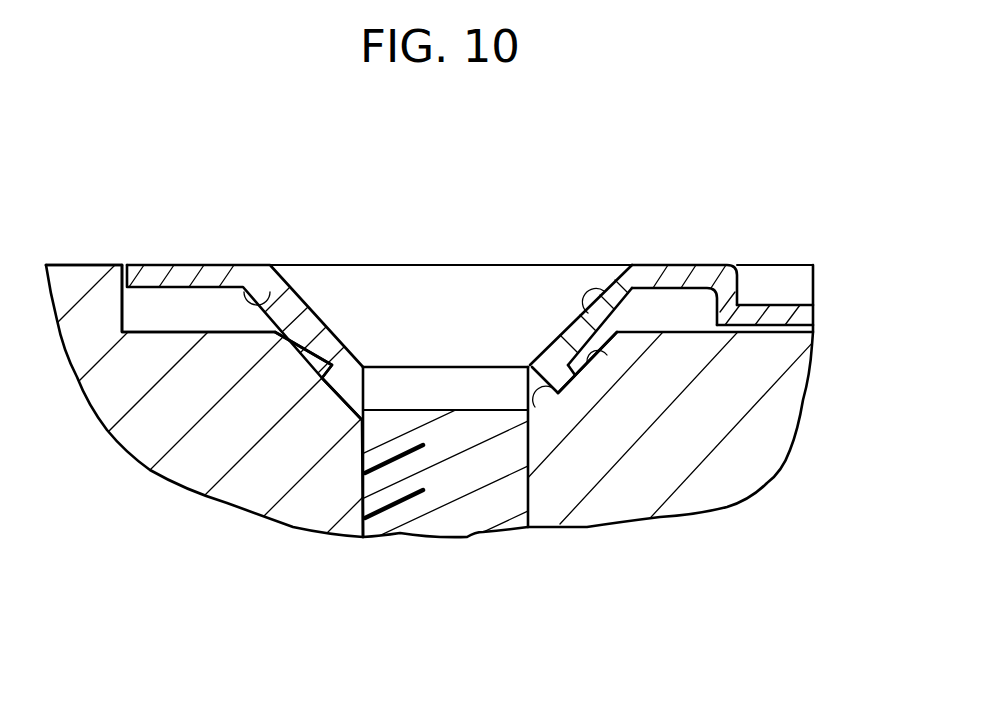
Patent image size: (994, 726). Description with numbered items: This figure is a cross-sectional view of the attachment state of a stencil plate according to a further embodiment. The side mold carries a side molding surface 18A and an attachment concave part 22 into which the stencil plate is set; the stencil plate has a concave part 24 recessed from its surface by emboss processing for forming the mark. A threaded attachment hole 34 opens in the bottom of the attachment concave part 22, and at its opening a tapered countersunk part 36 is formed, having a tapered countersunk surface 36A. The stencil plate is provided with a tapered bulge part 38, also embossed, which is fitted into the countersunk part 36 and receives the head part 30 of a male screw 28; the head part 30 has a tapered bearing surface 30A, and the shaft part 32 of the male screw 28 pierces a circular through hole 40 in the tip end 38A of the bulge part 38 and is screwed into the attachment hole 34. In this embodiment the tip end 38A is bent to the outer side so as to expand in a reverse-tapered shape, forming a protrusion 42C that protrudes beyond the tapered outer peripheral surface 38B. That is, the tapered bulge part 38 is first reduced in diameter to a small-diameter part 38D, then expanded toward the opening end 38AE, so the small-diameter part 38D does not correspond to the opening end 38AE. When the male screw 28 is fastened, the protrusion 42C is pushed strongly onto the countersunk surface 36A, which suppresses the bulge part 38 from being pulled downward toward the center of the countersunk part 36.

The side molding surface 18A is at (85, 264).
The attachment concave part 22 is at (190, 331).
The tapered outer peripheral surface 38B is at (241, 280).
The bulge part 38 is at (304, 313).
The through hole 40 is at (383, 362).
The head part 30 is at (432, 293).
The male screw 28 is at (484, 250).
The small-diameter part 38D is at (531, 362).
The bearing surface 30A is at (604, 289).
The concave part 24 is at (768, 304).
The countersunk part 36 is at (298, 358).
The tip end 38A is at (335, 380).
The shaft part 32 is at (450, 513).
The attachment hole 34 is at (521, 510).
The opening end 38AE is at (538, 402).
The protrusion 42C is at (580, 374).
The countersunk surface 36A is at (662, 482).